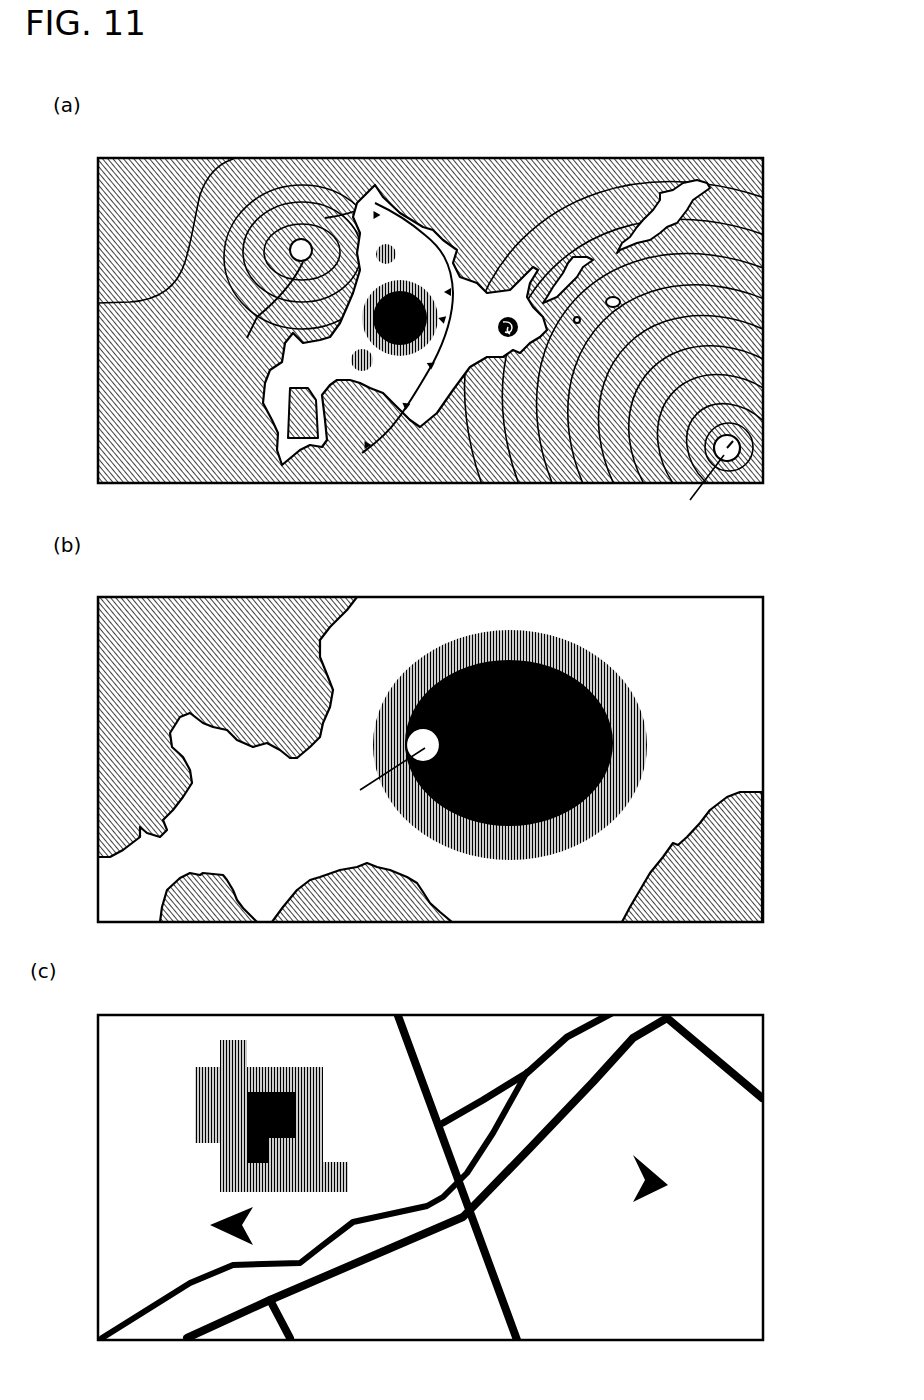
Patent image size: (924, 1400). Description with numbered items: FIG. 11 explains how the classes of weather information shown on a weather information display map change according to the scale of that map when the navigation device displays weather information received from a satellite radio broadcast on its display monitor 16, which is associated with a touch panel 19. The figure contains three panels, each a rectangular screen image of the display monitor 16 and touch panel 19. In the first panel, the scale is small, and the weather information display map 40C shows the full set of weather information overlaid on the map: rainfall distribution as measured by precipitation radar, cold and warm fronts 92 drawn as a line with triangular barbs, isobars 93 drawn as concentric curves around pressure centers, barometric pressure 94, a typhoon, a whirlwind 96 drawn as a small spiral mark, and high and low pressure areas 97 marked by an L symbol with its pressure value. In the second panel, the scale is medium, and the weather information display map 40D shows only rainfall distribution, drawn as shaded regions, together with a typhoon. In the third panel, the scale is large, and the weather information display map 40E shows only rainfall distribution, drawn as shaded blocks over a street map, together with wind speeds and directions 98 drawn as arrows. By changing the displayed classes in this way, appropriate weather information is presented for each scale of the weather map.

The display monitor 16 is at (511, 451).
The touch panel 19 is at (511, 451).
The weather information display map 40C is at (511, 451).
The weather information display map 40D is at (464, 759).
The weather information display map 40E is at (463, 1176).
The cold and warm fronts 92 is at (460, 248).
The isobars 93 is at (210, 184).
The barometric pressure 94 is at (269, 311).
The whirlwinds 96 is at (498, 327).
The high and low pressure areas 97 is at (303, 238).
The wind speeds and directions 98 is at (255, 1223).